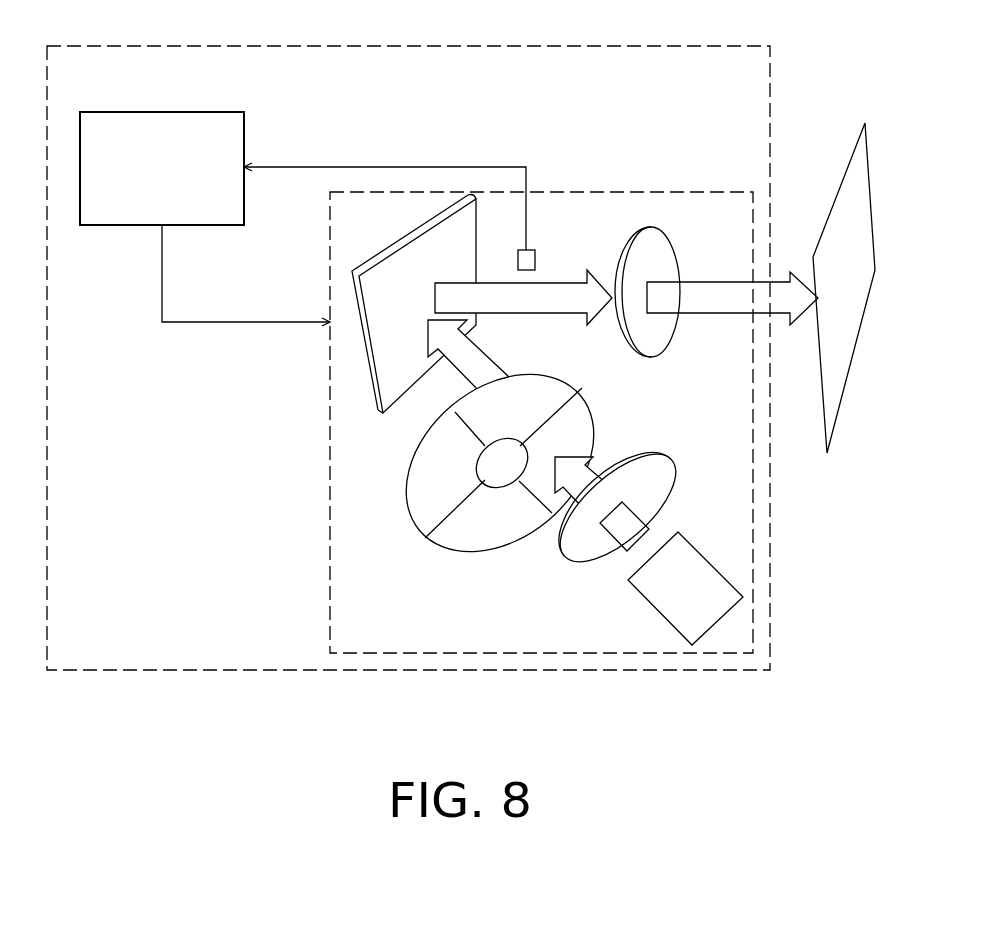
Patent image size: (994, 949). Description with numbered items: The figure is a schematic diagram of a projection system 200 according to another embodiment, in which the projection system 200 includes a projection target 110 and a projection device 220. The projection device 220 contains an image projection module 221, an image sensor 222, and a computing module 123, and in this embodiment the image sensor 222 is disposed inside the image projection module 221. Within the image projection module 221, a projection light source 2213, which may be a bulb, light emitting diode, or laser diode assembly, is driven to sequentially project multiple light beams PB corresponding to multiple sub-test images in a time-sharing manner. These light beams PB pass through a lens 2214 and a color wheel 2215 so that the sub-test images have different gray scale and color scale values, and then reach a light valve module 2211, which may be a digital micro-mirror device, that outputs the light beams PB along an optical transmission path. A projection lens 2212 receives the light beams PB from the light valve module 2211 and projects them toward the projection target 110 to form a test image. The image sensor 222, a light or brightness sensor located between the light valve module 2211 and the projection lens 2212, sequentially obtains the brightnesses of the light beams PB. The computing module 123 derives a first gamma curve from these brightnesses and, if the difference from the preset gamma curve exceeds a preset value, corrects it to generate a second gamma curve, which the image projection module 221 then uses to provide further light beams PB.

The projection system 200 is at (847, 731).
The projection device 220 is at (452, 45).
The computing module 123 is at (202, 111).
The image projection module 221 is at (640, 191).
The image sensor 222 is at (535, 262).
The light valve module 2211 is at (392, 390).
The light beam PB is at (522, 307).
The color wheel 2215 is at (580, 411).
The lens 2214 is at (650, 457).
The projection light source 2213 is at (703, 552).
The projection lens 2212 is at (645, 228).
The projection target 110 is at (857, 217).